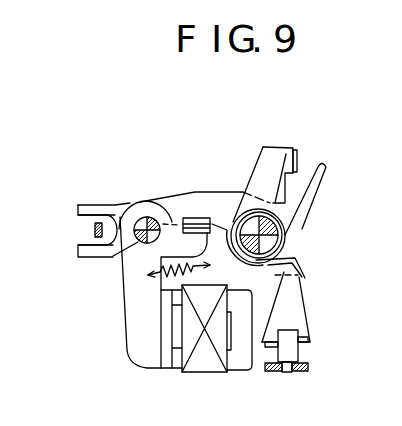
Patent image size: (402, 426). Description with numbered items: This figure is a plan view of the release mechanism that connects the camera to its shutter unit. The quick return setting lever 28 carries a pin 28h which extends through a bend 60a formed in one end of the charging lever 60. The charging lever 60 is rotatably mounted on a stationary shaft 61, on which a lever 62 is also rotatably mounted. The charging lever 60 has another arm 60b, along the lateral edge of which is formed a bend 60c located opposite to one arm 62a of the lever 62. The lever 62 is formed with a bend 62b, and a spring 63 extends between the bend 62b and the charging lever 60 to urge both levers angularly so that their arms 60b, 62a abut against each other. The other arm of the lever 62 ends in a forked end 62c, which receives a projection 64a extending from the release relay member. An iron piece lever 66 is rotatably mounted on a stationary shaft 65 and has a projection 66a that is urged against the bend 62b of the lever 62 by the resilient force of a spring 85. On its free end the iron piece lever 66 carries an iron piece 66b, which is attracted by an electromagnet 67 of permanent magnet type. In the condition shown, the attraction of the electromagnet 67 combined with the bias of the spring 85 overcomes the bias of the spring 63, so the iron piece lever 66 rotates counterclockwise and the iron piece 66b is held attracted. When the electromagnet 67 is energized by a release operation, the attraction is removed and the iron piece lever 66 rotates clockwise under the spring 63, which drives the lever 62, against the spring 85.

The quick return setting lever 28 is at (297, 372).
The pin 28h is at (292, 350).
The charging lever 60 is at (302, 296).
The bend 60a is at (308, 328).
The arm 60b is at (272, 148).
The bend 60c is at (300, 152).
The stationary shaft 61 is at (262, 241).
The lever 62 is at (227, 192).
The arm 62a is at (322, 188).
The bend 62b is at (198, 211).
The forked end 62c is at (108, 205).
The spring 63 is at (300, 228).
The projection 64a is at (95, 231).
The stationary shaft 65 is at (142, 217).
The iron piece lever 66 is at (124, 292).
The projection 66a is at (197, 273).
The iron piece 66b is at (163, 348).
The electromagnet 67 is at (208, 372).
The spring 85 is at (167, 257).